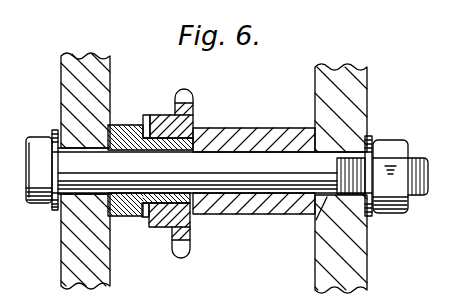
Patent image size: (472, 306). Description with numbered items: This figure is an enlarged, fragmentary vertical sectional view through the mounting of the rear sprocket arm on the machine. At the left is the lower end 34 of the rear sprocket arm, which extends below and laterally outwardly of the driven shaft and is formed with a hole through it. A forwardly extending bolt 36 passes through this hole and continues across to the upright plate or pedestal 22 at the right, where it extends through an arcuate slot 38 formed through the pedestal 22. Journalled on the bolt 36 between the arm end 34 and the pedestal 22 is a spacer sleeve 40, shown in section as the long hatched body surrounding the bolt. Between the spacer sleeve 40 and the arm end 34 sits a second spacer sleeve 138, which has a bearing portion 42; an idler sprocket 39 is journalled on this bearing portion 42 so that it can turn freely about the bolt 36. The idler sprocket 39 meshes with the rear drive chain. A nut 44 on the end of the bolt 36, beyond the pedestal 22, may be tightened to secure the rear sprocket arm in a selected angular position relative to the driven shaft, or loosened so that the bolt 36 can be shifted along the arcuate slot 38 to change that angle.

The upright plate or pedestal 22 is at (357, 92).
The lower end of rear sprocket arm 34 is at (70, 69).
The bolt 36 is at (78, 167).
The arcuate slot 38 is at (316, 220).
The idler sprocket 39 is at (185, 102).
The spacer sleeve 40 is at (231, 133).
The bearing portion 42 is at (147, 122).
The nut 44 is at (390, 150).
The second spacer sleeve 138 is at (118, 125).